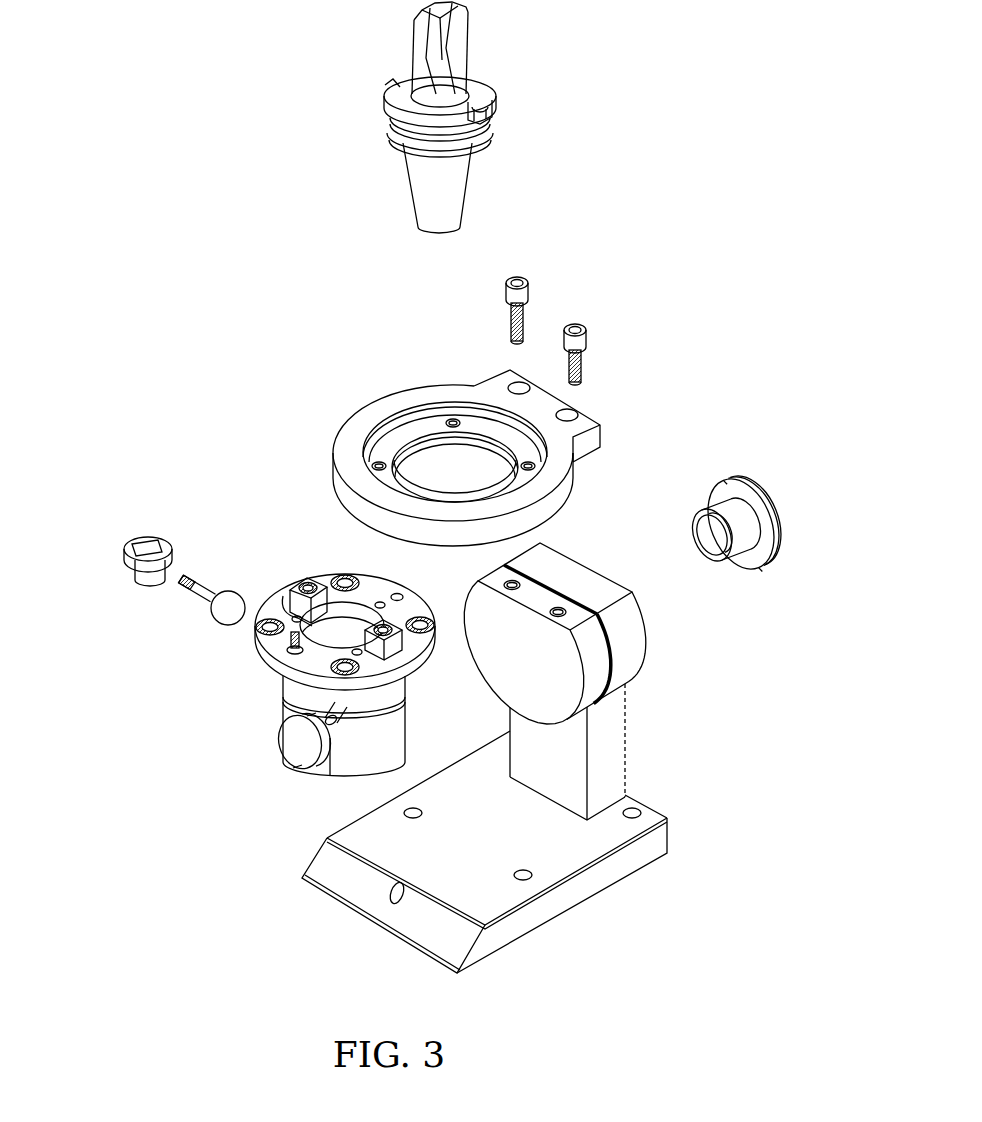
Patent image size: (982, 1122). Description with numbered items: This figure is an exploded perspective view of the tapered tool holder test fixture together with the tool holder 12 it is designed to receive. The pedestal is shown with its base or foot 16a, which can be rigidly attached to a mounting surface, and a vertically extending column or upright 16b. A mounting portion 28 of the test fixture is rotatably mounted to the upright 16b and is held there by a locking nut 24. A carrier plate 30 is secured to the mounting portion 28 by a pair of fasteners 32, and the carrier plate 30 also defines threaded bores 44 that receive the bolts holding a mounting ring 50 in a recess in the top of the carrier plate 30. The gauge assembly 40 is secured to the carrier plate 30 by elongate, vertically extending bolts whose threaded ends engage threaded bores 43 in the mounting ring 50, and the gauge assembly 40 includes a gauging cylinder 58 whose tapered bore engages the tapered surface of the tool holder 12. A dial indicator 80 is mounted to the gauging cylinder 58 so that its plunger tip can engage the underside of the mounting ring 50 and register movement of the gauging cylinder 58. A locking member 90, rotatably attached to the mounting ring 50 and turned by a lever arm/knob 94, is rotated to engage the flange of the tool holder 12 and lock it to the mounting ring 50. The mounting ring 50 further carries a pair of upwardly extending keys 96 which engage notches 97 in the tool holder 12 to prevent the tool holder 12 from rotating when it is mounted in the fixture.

The tool holder 12 is at (480, 117).
The notches 97 is at (482, 124).
The fasteners 32 is at (525, 285).
The carrier plate 30 is at (447, 440).
The threaded bores 44 is at (452, 419).
The locking nut 24 is at (768, 506).
The locking member 90 is at (117, 542).
The lever arm/knob 94 is at (213, 620).
The gauge assembly 40 is at (306, 675).
The mounting ring 50 is at (272, 672).
The keys 96 is at (294, 590).
The threaded bores 43 is at (399, 600).
The gauging cylinder 58 is at (383, 753).
The dial indicator 80 is at (300, 748).
The mounting portion 28 is at (545, 669).
The upright 16b is at (612, 744).
The foot 16a is at (491, 856).